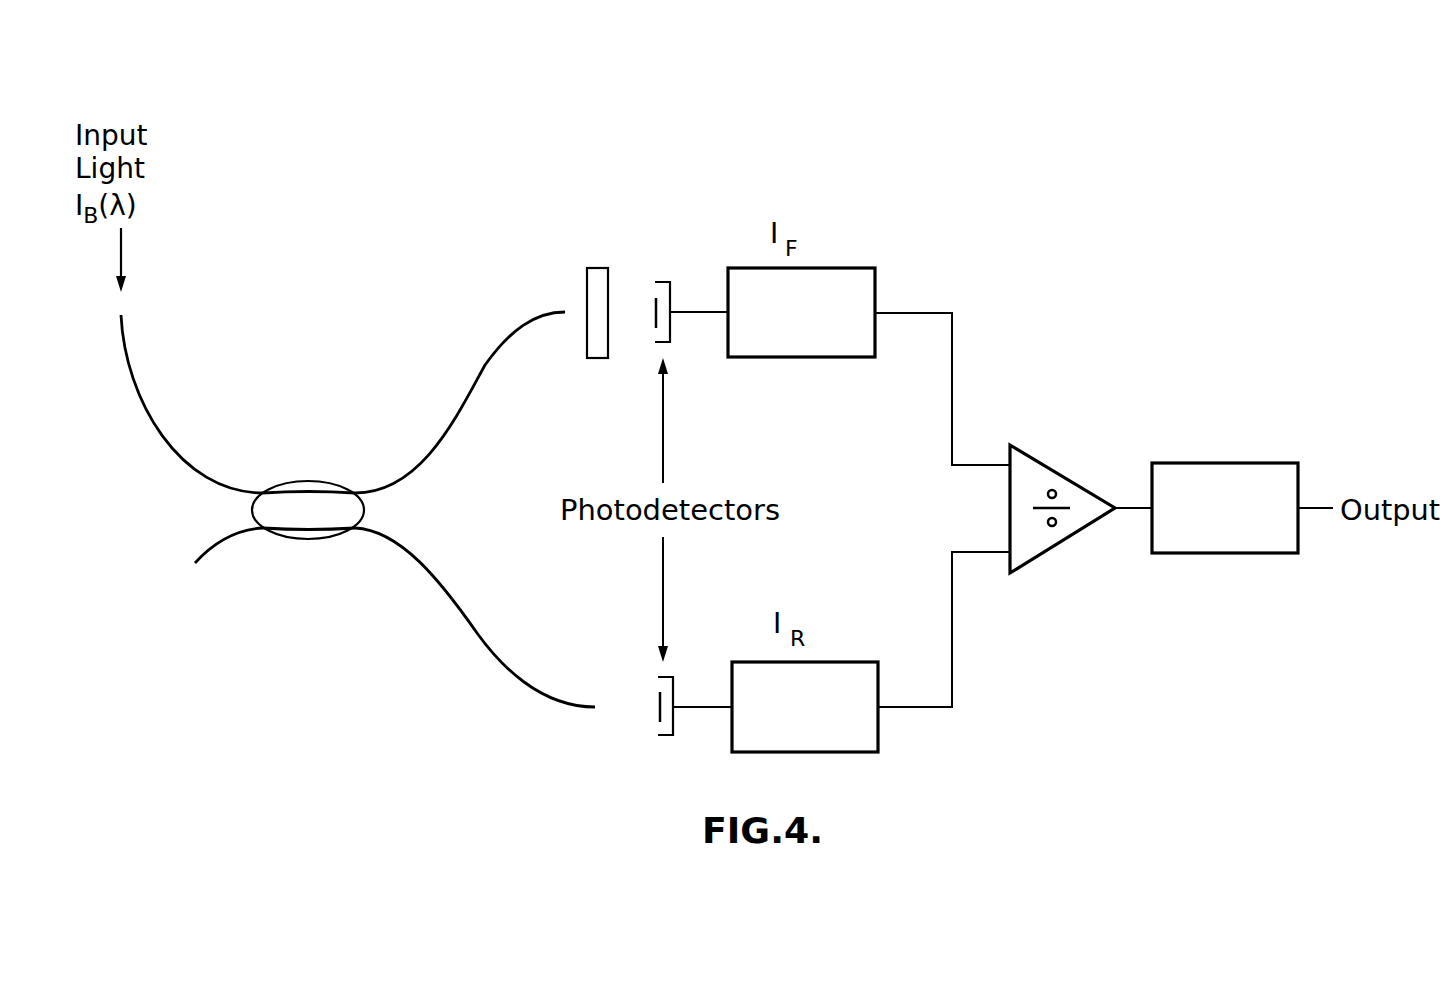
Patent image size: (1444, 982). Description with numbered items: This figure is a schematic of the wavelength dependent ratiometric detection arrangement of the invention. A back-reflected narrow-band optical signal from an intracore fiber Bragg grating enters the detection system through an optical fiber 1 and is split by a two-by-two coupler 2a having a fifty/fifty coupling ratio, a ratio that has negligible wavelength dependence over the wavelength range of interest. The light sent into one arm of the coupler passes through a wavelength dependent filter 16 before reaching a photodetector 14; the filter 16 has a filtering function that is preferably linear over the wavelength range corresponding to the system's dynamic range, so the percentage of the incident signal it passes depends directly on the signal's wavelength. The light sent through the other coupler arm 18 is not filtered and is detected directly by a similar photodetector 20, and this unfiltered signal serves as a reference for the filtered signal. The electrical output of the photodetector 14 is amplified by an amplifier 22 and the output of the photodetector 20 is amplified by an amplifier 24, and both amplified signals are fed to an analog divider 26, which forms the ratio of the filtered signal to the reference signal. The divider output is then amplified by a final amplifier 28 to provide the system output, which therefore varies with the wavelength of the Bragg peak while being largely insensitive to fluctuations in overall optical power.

The optical fiber 1 is at (152, 411).
The 2×2 coupler 2a is at (312, 535).
The photodetector 14 is at (655, 283).
The filter 16 is at (597, 350).
The coupler arm 18 is at (475, 681).
The photodetector 20 is at (665, 680).
The amplifier 22 is at (850, 282).
The amplifier 24 is at (850, 676).
The analog divider 26 is at (1052, 537).
The amplifier 28 is at (1278, 478).